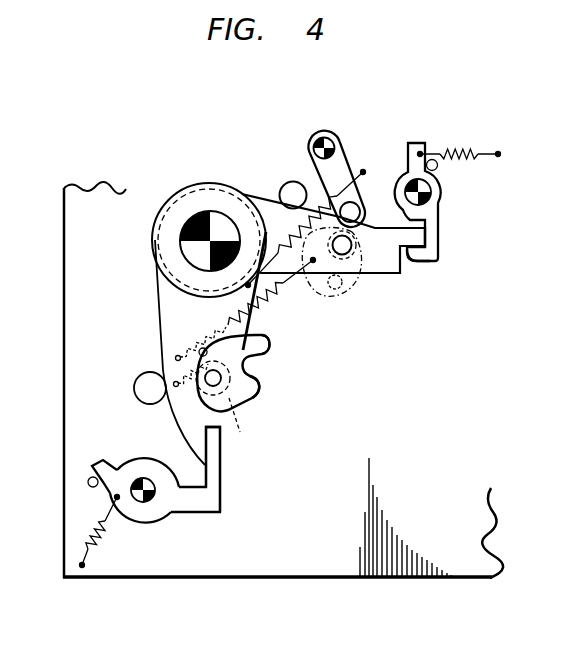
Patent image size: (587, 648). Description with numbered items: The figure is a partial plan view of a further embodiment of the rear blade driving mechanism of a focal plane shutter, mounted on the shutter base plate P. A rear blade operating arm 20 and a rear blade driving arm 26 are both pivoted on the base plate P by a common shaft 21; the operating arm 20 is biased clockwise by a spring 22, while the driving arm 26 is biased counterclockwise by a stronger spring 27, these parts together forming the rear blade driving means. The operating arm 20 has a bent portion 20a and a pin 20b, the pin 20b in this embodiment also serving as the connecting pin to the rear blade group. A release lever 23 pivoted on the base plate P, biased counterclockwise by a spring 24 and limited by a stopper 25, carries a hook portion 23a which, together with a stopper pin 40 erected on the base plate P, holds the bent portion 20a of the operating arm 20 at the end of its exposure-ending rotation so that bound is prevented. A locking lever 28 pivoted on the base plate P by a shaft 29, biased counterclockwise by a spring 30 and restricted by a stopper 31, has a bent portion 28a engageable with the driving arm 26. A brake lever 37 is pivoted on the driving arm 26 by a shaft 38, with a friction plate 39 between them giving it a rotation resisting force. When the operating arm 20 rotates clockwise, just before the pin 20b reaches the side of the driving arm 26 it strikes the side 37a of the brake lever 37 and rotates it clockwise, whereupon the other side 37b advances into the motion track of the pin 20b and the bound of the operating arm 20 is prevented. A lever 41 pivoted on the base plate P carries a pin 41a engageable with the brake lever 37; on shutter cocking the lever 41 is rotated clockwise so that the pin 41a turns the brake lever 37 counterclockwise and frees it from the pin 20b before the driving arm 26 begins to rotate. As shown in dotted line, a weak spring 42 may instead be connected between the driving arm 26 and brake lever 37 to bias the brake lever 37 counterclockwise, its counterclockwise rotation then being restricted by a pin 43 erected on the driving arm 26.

The rear blade operating arm 20 is at (393, 274).
The bent portion 20a is at (413, 237).
The pin 20b is at (352, 249).
The shaft 21 is at (196, 258).
The spring 22 is at (268, 302).
The release lever 23 is at (441, 196).
The hook portion 23a is at (420, 255).
The spring 24 is at (453, 150).
The stopper 25 is at (438, 167).
The rear blade driving arm 26 is at (162, 300).
The spring 27 is at (282, 240).
The locking lever 28 is at (193, 513).
The bent portion 28a is at (214, 478).
The shaft 29 is at (145, 500).
The spring 30 is at (94, 541).
The stopper 31 is at (88, 482).
The brake lever 37 is at (245, 403).
The side 37a is at (260, 382).
The side 37b is at (270, 352).
The shaft 38 is at (207, 382).
The friction plate 39 is at (240, 432).
The stopper pin 40 is at (292, 181).
The lever 41 is at (340, 166).
The pin 41a is at (358, 206).
The weak spring 42 is at (180, 372).
The pin 43 is at (199, 350).
The shutter base plate P is at (334, 577).